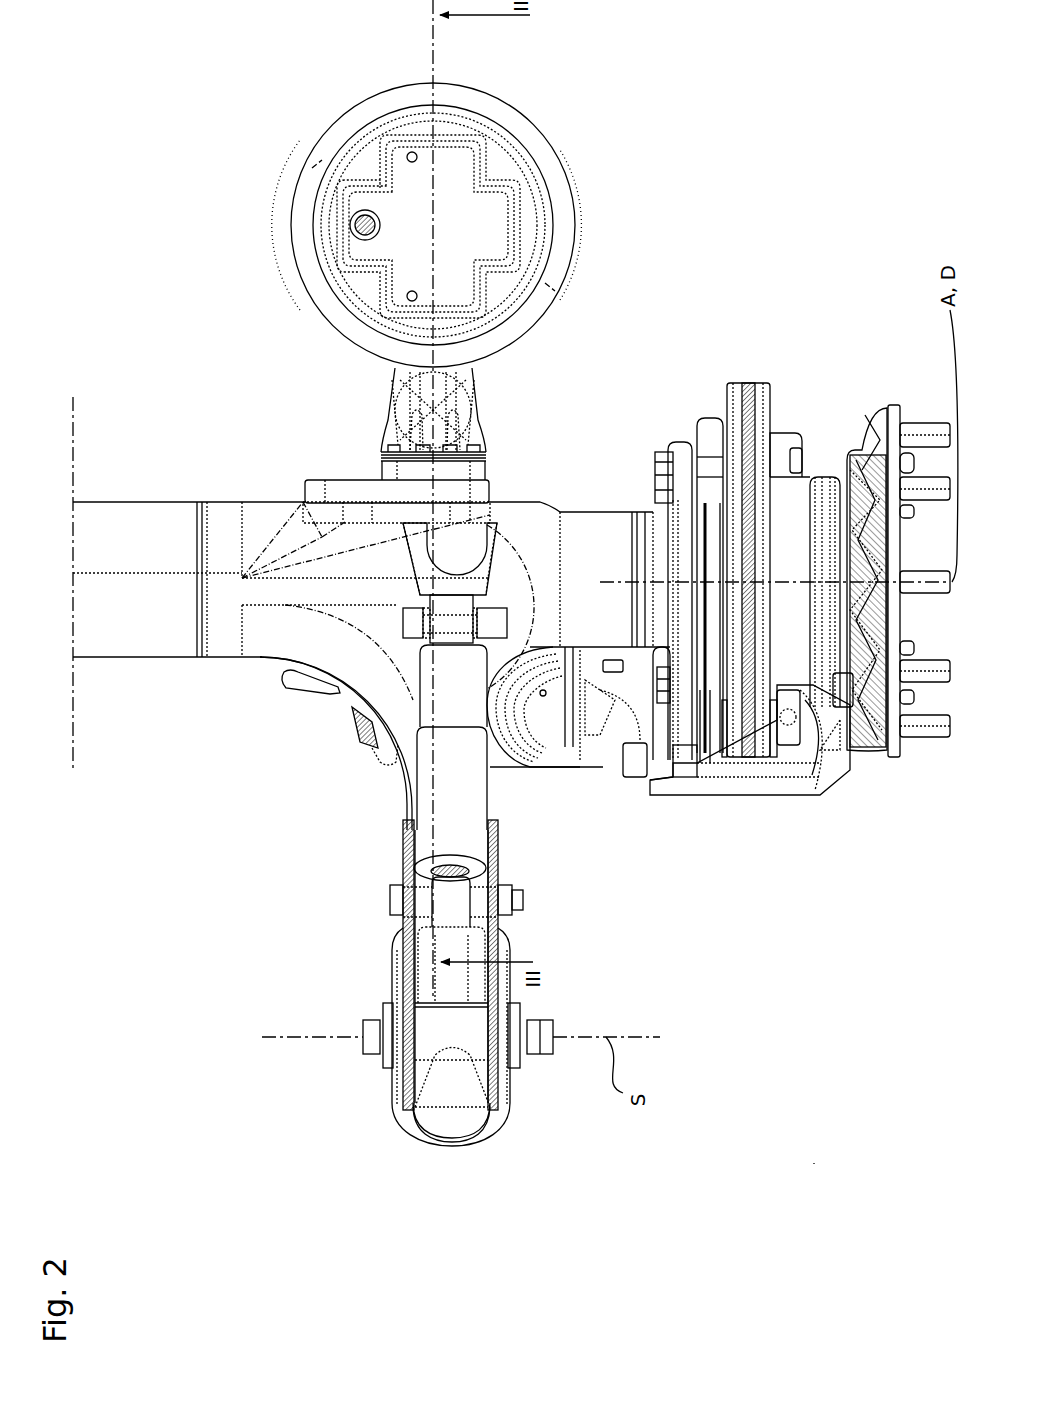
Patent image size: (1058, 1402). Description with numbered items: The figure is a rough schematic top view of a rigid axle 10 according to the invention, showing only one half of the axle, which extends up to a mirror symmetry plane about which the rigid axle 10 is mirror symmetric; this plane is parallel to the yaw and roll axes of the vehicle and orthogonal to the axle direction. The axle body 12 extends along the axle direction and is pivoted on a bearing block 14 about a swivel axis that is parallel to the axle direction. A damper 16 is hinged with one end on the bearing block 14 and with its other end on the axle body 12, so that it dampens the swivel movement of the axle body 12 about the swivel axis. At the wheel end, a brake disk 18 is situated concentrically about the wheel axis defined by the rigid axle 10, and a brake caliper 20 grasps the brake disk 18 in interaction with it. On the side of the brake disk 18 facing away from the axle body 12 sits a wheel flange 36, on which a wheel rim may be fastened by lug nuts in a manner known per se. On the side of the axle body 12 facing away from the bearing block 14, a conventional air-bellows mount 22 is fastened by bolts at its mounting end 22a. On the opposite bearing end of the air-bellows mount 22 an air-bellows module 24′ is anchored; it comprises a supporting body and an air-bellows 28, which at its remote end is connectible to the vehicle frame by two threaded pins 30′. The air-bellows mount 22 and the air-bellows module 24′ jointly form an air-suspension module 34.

The rigid axle 10 is at (816, 1165).
The axle body 12 is at (542, 547).
The bearing block 14 is at (498, 1103).
The damper 16 is at (425, 814).
The brake disk 18 is at (758, 398).
The brake caliper 20 is at (743, 832).
The air-bellows mount 22 is at (465, 377).
The mounting end 22a is at (373, 453).
The air-bellows module 24′ is at (243, 330).
The air-bellows 28 is at (392, 100).
The threaded pins 30′ is at (406, 158).
The air-suspension module 34 is at (574, 136).
The wheel flange 36 is at (886, 396).